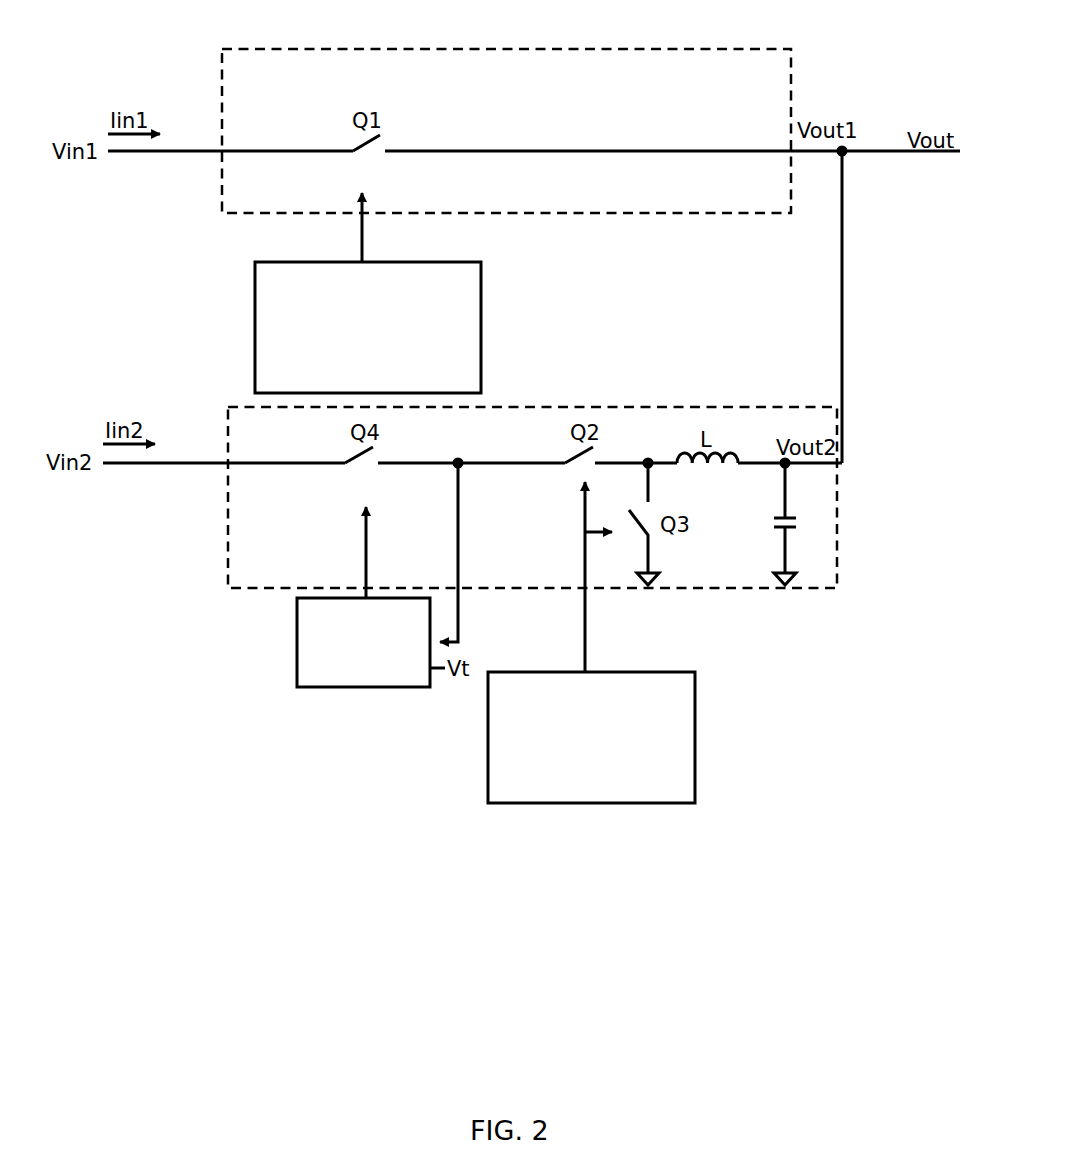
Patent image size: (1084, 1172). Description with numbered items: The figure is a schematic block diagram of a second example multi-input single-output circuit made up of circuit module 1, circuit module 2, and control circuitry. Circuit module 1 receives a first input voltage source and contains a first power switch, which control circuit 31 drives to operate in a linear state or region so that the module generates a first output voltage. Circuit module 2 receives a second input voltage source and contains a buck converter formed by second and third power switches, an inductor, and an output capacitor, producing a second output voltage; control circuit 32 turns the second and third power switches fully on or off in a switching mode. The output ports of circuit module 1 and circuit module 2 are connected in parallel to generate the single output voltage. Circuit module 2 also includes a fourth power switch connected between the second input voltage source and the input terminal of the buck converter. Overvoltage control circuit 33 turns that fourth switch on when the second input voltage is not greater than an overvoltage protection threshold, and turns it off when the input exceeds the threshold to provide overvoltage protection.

The circuit module 1 is at (620, 45).
The circuit module 2 is at (748, 402).
The control circuit 31 is at (415, 259).
The control circuit 32 is at (665, 670).
The overvoltage control circuit 33 is at (353, 690).